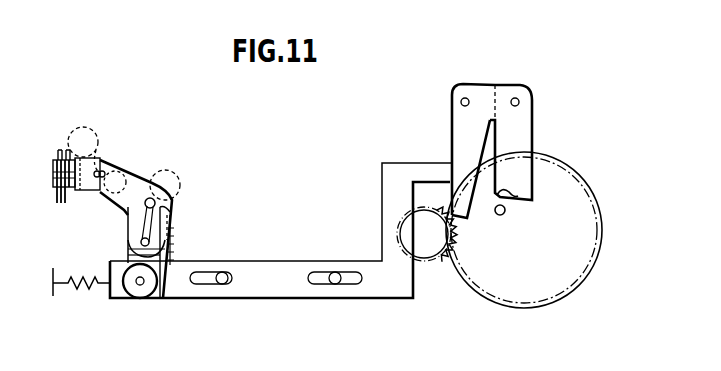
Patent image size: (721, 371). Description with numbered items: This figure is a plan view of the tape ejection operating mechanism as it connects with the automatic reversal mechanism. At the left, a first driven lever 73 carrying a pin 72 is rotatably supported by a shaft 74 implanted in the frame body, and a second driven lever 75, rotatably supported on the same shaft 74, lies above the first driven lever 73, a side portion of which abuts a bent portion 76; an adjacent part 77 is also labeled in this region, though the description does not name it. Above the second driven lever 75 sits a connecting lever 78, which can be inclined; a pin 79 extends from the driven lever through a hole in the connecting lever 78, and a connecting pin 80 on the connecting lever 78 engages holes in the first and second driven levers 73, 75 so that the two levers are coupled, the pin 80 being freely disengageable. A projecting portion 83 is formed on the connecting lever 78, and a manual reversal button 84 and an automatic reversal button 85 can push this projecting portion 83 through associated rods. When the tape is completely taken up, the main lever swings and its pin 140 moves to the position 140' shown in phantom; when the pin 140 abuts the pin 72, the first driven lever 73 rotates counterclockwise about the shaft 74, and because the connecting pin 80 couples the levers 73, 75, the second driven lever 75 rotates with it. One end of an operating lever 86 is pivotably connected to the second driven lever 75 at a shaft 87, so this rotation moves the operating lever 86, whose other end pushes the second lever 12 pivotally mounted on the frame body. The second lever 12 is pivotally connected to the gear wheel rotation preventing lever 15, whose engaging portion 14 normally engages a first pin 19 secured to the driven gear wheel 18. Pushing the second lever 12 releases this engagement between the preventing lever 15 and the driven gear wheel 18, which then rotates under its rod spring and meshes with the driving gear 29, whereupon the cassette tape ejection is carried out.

The second lever 12 is at (455, 126).
The gear wheel rotation preventing lever 15 is at (522, 130).
The engaging portion 14 is at (512, 205).
The first pin 19 is at (500, 216).
The driven gear wheel 18 is at (503, 306).
The driving gear 29 is at (432, 262).
The operating lever 86 is at (290, 298).
The shaft 87 is at (140, 285).
The pin 72 is at (127, 172).
The first driven lever 73 is at (128, 240).
The shaft 74 is at (158, 208).
The second driven lever 75 is at (110, 261).
The bent portion 76 is at (172, 230).
The link 77 is at (128, 222).
The connecting lever 78 is at (90, 191).
The pin 79 is at (170, 246).
The connecting pin 80 is at (106, 165).
The projecting portion 83 is at (54, 168).
The manual reversal button 84 is at (62, 203).
The automatic reversal button 85 is at (55, 190).
The pin 140 is at (181, 172).
The position 140' is at (81, 120).